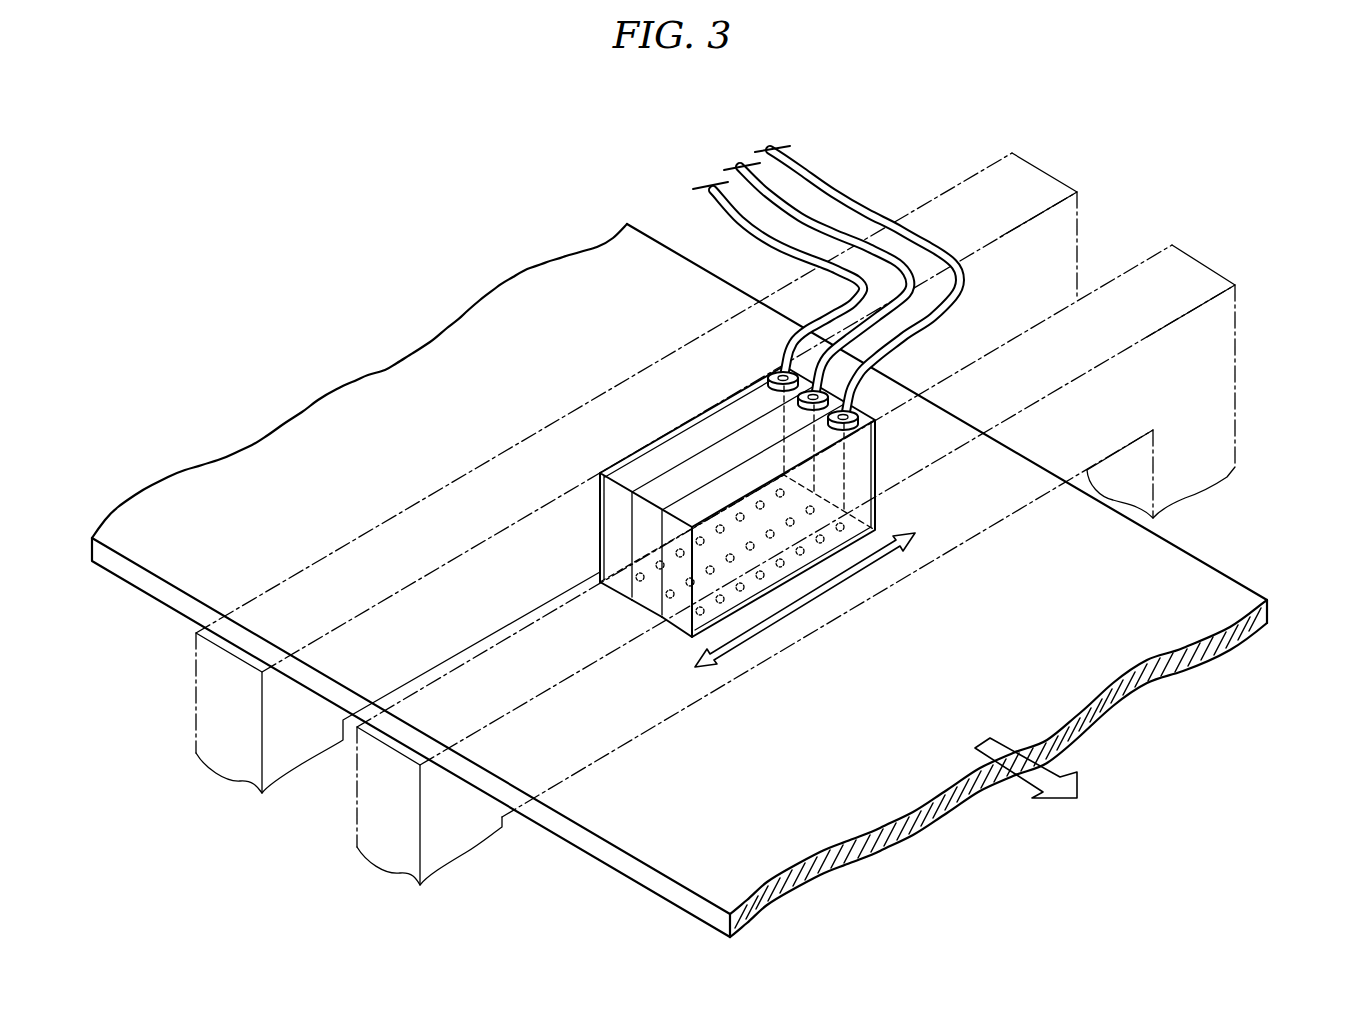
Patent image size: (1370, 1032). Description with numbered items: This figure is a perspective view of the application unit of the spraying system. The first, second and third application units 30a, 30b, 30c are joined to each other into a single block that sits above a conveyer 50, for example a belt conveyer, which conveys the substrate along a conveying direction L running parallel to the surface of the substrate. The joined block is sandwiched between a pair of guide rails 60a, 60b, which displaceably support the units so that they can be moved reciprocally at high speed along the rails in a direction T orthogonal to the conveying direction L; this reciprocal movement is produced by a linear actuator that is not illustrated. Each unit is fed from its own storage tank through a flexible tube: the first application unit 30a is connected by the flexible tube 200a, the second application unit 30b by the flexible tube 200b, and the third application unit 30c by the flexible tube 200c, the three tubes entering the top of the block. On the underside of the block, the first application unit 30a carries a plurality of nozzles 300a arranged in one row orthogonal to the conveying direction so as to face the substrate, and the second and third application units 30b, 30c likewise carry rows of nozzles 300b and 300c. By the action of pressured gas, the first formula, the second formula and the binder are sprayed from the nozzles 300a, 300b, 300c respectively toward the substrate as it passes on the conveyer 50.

The conveyer 50 is at (1215, 590).
The guide rail 60a is at (293, 697).
The guide rail 60b is at (590, 765).
The first application unit 30a is at (767, 457).
The second application unit 30b is at (728, 450).
The third application unit 30c is at (680, 447).
The nozzles 300a is at (690, 642).
The nozzles 300b is at (640, 615).
The nozzles 300c is at (592, 580).
The flexible tube 200a is at (790, 178).
The flexible tube 200b is at (793, 223).
The flexible tube 200c is at (793, 253).
The direction T is at (828, 588).
The conveying direction L is at (1028, 781).